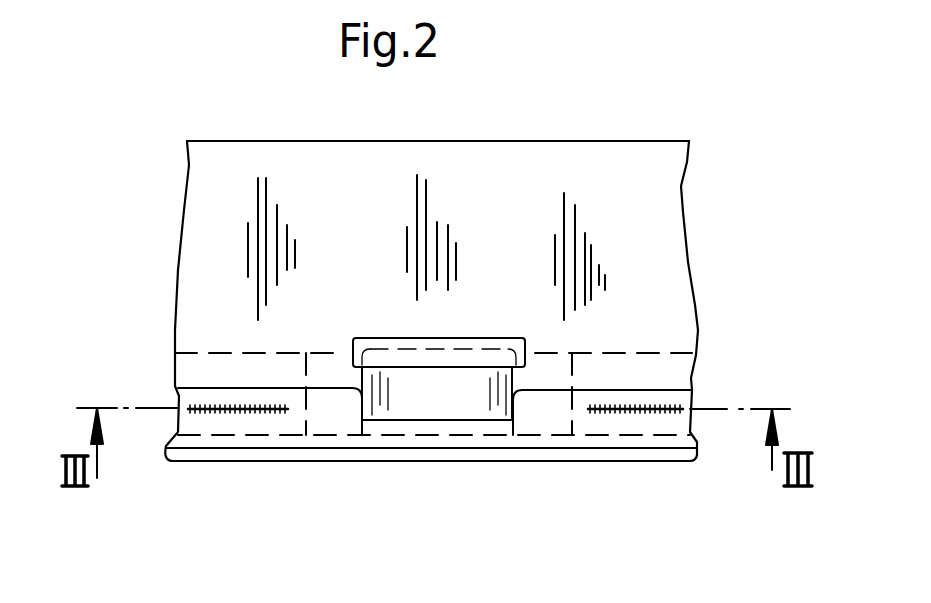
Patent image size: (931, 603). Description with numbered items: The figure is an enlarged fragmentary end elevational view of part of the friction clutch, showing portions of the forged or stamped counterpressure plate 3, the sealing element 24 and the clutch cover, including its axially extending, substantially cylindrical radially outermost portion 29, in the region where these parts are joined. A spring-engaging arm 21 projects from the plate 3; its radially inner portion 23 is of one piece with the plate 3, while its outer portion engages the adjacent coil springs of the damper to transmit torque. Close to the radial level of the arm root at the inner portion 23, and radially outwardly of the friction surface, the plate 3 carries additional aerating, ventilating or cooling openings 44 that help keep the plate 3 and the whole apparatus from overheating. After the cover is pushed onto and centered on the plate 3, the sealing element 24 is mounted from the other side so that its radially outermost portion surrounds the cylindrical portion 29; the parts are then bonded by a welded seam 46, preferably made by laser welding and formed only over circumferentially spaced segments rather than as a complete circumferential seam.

The radially outermost portion of the clutch cover 29 is at (630, 218).
The counterpressure plate 3 is at (643, 383).
The arm 21 is at (462, 353).
The radially inner portion of the arm 23 is at (390, 397).
The aerating, ventilating or cooling opening 44 is at (335, 415).
The welded seam 46 is at (225, 415).
The sealing element 24 is at (657, 445).